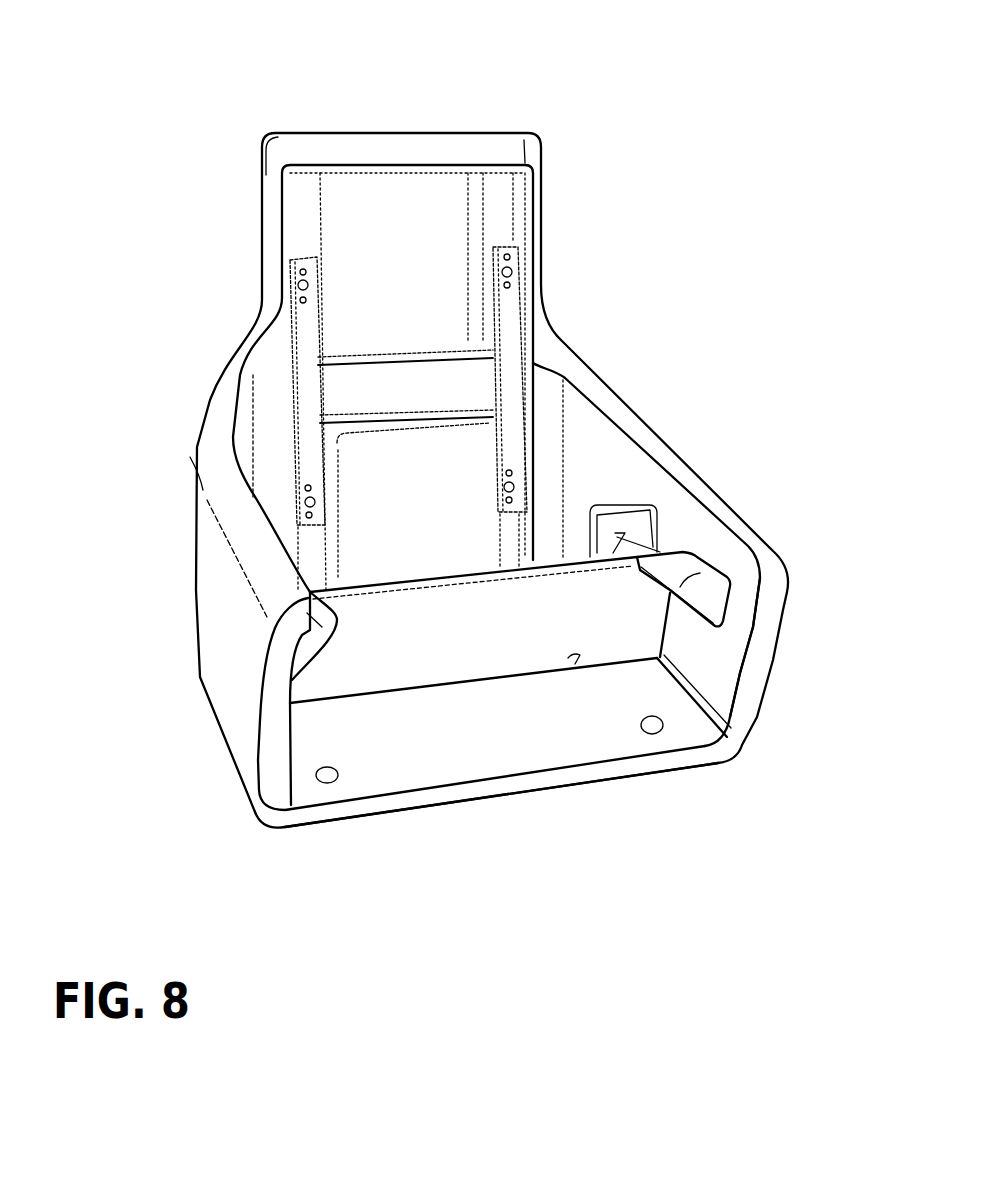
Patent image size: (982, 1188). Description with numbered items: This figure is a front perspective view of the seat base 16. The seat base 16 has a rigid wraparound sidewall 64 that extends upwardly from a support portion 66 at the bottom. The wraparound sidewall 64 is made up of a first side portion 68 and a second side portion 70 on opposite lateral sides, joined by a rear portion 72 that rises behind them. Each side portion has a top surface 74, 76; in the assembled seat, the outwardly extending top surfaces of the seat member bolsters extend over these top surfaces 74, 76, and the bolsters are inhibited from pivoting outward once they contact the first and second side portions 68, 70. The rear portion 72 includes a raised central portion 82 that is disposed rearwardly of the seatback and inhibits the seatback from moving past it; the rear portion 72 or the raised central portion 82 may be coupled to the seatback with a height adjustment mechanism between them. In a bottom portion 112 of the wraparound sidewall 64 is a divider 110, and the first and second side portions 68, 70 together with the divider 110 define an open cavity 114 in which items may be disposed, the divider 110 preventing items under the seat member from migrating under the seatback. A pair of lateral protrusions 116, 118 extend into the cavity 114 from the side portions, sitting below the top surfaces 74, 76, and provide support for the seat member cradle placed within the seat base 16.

The seat base 16 is at (206, 630).
The wraparound sidewall 64 is at (227, 667).
The support portion 66 is at (530, 740).
The first side portion 68 is at (243, 740).
The second side portion 70 is at (722, 657).
The rear portion 72 is at (430, 158).
The top surface 74 is at (260, 524).
The top surface 76 is at (696, 488).
The raised central portion 82 is at (314, 133).
The divider 110 is at (548, 580).
The bottom portion 112 is at (427, 747).
The open cavity 114 is at (575, 663).
The lateral protrusion 116 is at (313, 610).
The lateral protrusion 118 is at (698, 588).